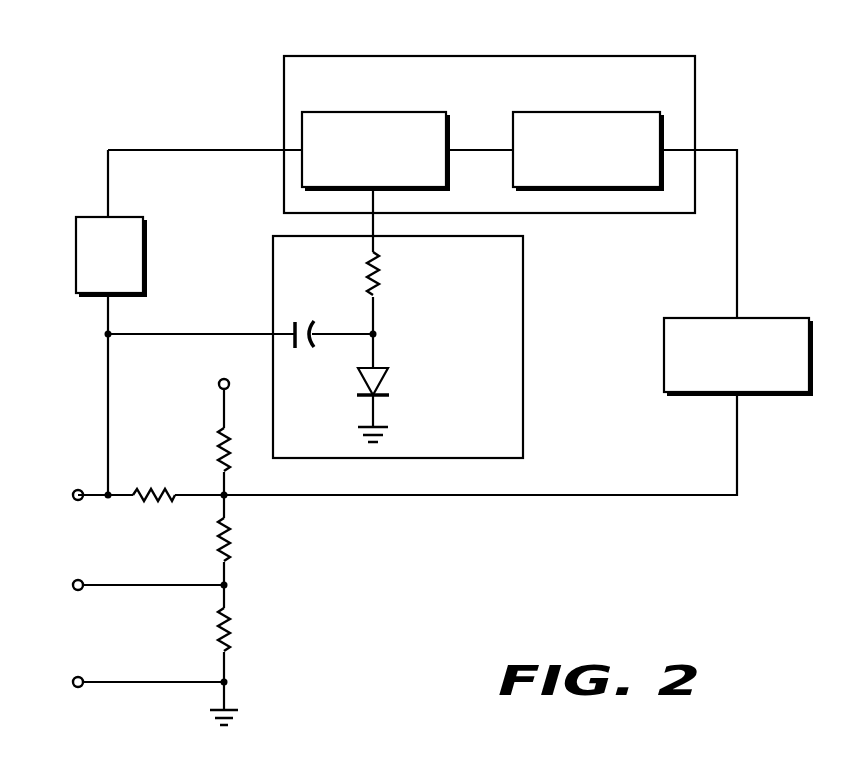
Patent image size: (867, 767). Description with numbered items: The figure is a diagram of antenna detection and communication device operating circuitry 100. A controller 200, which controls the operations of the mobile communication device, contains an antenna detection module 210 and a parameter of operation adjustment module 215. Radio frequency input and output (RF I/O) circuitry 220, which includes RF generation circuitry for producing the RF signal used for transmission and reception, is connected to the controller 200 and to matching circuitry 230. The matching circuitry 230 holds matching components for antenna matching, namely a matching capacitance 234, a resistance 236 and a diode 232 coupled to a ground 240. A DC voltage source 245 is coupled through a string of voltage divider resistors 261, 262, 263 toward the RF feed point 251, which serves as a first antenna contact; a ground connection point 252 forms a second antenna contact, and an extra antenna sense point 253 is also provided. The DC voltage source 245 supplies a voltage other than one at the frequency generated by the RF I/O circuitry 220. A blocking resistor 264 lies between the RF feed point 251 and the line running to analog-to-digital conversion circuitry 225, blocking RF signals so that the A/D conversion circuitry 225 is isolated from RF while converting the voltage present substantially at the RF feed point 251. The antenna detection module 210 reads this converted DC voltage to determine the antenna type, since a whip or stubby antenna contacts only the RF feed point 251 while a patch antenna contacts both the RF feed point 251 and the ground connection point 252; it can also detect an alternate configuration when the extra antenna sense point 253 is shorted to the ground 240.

The operating circuitry 100 is at (780, 132).
The controller 200 is at (290, 56).
The antenna detection module 210 is at (553, 112).
The parameter of operation adjustment module 215 is at (352, 112).
The RF I/O circuitry 220 is at (88, 217).
The analog-to-digital conversion circuitry 225 is at (678, 318).
The matching circuitry 230 is at (523, 434).
The diode 232 is at (378, 370).
The matching capacitance 234 is at (304, 350).
The resistance 236 is at (368, 262).
The ground 240 is at (381, 426).
The DC voltage source 245 is at (218, 384).
The RF feed point 251 is at (75, 490).
The ground connection point 252 is at (75, 677).
The extra antenna sense point 253 is at (75, 580).
The resistor 261 is at (218, 446).
The resistor 262 is at (220, 532).
The resistor 263 is at (220, 622).
The blocking resistor 264 is at (150, 502).